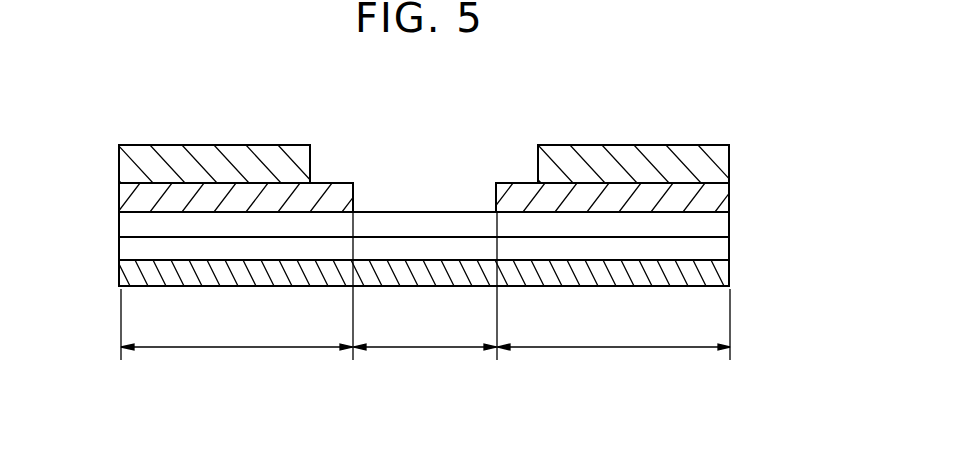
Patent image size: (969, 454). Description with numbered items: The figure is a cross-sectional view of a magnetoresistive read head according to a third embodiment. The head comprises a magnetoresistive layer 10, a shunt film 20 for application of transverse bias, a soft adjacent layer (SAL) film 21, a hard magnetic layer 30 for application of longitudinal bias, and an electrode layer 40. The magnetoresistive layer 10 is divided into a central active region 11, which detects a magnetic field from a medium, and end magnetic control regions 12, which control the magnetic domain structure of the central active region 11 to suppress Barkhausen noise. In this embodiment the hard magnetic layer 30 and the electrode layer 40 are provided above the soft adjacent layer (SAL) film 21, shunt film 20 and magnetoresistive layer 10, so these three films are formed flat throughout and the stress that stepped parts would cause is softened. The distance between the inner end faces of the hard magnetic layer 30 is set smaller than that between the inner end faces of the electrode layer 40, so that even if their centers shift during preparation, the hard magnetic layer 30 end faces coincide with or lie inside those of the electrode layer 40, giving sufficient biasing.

The electrode layer 40 is at (170, 158).
The hard magnetic layer 30 is at (143, 198).
The magnetoresistive layer 10 is at (142, 224).
The shunt film 20 is at (709, 252).
The soft adjacent layer (SAL) film 21 is at (138, 273).
The end magnetic control regions 12 is at (242, 348).
The central active region 11 is at (428, 348).